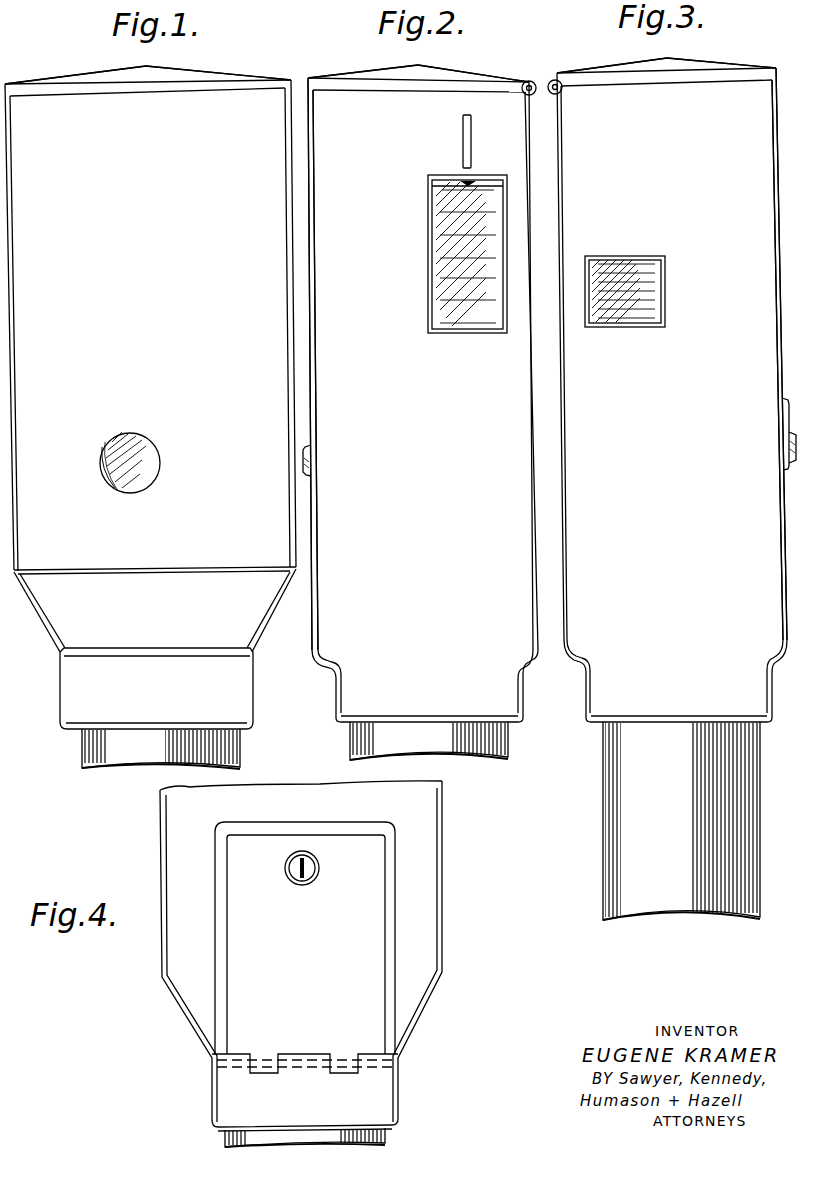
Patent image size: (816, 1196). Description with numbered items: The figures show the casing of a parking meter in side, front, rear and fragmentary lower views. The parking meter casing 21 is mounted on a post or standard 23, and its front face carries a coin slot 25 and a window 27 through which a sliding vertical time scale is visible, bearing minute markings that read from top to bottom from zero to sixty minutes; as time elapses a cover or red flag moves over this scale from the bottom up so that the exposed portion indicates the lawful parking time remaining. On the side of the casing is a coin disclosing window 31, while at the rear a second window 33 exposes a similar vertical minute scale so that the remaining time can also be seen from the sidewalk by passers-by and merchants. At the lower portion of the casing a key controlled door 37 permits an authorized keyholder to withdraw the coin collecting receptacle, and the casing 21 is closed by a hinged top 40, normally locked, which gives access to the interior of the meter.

In FIG. 1, the parking meter casing 21 is at (248, 106).
In FIG. 2, the parking meter casing 21 is at (500, 688).
In FIG. 3, the parking meter casing 21 is at (588, 107).
In FIG. 4, the parking meter casing 21 is at (417, 988).
In FIG. 1, the post or standard 23 is at (95, 750).
In FIG. 2, the post or standard 23 is at (459, 752).
In FIG. 3, the post or standard 23 is at (617, 820).
In FIG. 4, the post or standard 23 is at (328, 1133).
In FIG. 2, the coin slot 25 is at (463, 129).
In FIG. 2, the window 27 is at (430, 296).
In FIG. 1, the coin disclosing window 31 is at (140, 492).
In FIG. 3, the second window 33 is at (662, 290).
In FIG. 2, the key controlled door 37 is at (311, 632).
In FIG. 3, the key controlled door 37 is at (783, 549).
In FIG. 4, the key controlled door 37 is at (247, 962).
In FIG. 1, the hinged top 40 is at (145, 78).
In FIG. 2, the hinged top 40 is at (417, 68).
In FIG. 3, the hinged top 40 is at (674, 66).